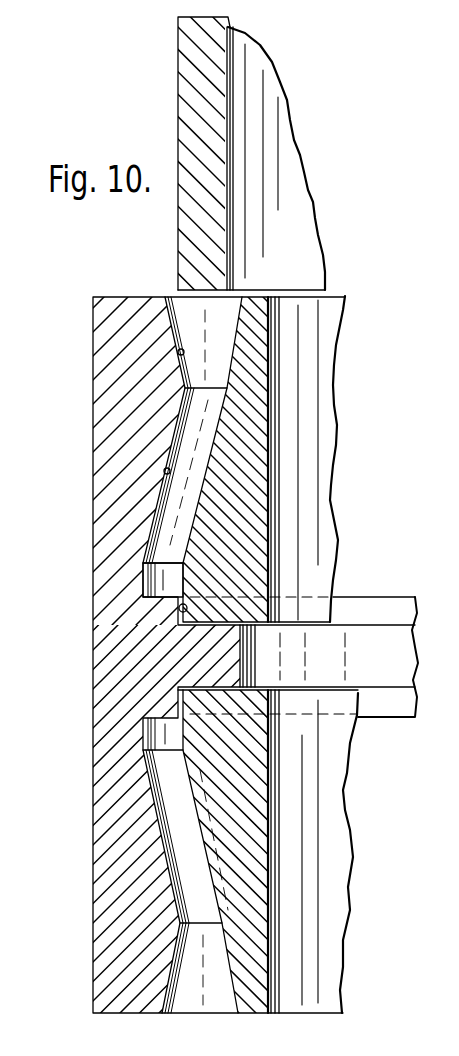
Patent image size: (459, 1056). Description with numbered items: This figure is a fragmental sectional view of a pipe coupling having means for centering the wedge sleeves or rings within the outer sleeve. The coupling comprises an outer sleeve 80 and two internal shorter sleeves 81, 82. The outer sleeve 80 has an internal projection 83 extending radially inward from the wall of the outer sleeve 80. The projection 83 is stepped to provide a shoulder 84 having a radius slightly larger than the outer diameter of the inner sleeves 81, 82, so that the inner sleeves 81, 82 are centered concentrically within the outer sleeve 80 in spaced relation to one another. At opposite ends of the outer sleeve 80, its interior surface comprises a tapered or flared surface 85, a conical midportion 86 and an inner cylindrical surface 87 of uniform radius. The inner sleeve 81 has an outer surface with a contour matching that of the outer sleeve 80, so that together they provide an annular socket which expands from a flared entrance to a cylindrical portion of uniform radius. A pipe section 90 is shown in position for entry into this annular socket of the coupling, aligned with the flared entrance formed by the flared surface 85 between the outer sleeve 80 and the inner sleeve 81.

The outer sleeve 80 is at (125, 516).
The inner sleeve 81 is at (255, 480).
The inner sleeve 82 is at (247, 775).
The internal projection 83 is at (360, 642).
The shoulder 84 is at (181, 606).
The tapered or flared surface 85 is at (180, 352).
The conical midportion 86 is at (166, 470).
The inner cylindrical surface 87 is at (143, 580).
The pipe section 90 is at (188, 208).